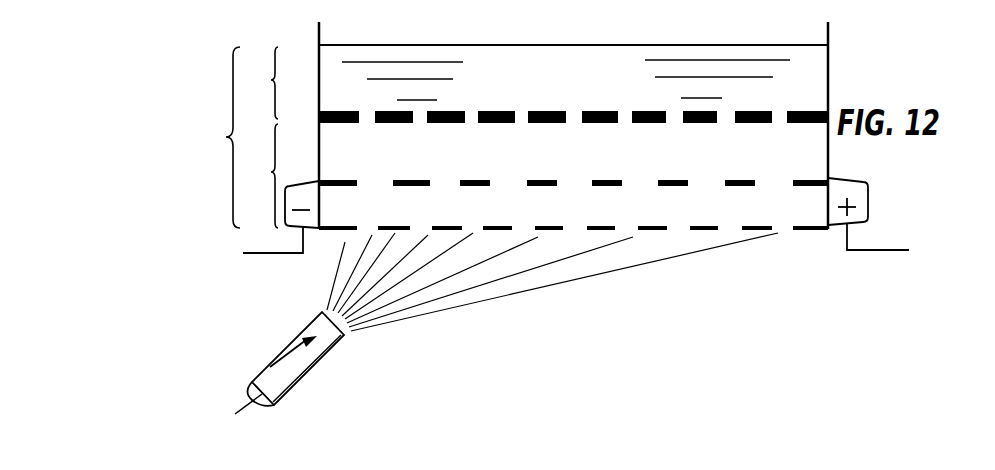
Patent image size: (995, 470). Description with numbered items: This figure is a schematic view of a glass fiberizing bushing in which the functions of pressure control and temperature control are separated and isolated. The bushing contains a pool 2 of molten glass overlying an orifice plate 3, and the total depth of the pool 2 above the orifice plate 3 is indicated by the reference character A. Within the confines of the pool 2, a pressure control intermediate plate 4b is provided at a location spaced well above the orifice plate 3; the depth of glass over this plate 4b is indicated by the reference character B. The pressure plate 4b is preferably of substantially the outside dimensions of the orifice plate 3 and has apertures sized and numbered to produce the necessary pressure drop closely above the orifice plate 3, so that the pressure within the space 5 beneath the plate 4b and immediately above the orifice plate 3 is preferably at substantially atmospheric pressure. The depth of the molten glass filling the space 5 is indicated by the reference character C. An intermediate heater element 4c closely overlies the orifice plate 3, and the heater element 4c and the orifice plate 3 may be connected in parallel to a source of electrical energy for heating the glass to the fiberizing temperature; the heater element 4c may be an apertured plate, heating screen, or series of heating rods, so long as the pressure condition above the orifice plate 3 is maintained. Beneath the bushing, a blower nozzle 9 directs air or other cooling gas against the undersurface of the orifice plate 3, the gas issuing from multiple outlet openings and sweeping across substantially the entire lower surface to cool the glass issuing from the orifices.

The pool of molten glass 2 is at (573, 87).
The space 5 is at (577, 158).
The pressure control intermediate plate 4b is at (498, 111).
The intermediate heater element 4c is at (476, 180).
The orifice plate 3 is at (443, 227).
The blower nozzle 9 is at (297, 337).
The total depth of the pool A is at (220, 137).
The depth of glass over the intermediate plate B is at (262, 83).
The depth of the pool filling the space C is at (266, 176).